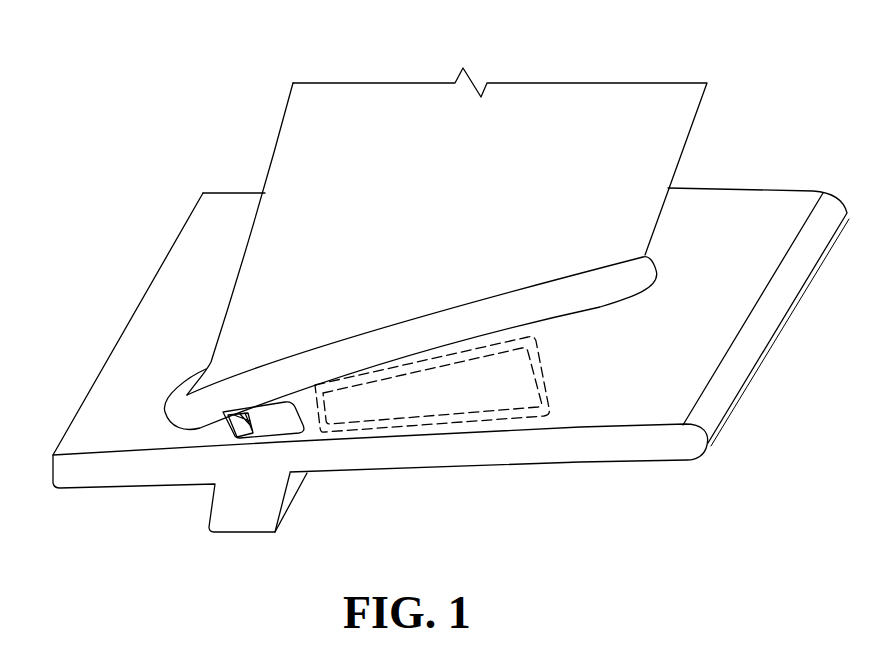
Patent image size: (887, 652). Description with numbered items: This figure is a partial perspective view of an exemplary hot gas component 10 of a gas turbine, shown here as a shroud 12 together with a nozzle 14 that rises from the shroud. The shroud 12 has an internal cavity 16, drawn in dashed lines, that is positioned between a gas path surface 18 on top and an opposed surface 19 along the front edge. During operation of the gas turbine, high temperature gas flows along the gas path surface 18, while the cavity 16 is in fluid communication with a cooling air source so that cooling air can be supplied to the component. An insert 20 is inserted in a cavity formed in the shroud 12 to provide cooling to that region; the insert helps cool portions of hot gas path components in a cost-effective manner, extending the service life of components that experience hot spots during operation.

The hot gas component 10 is at (746, 70).
The shroud 12 is at (117, 483).
The nozzle 14 is at (280, 132).
The internal cavity 16 is at (550, 383).
The gas path surface 18 is at (657, 358).
The opposed surface 19 is at (545, 463).
The insert 20 is at (260, 428).